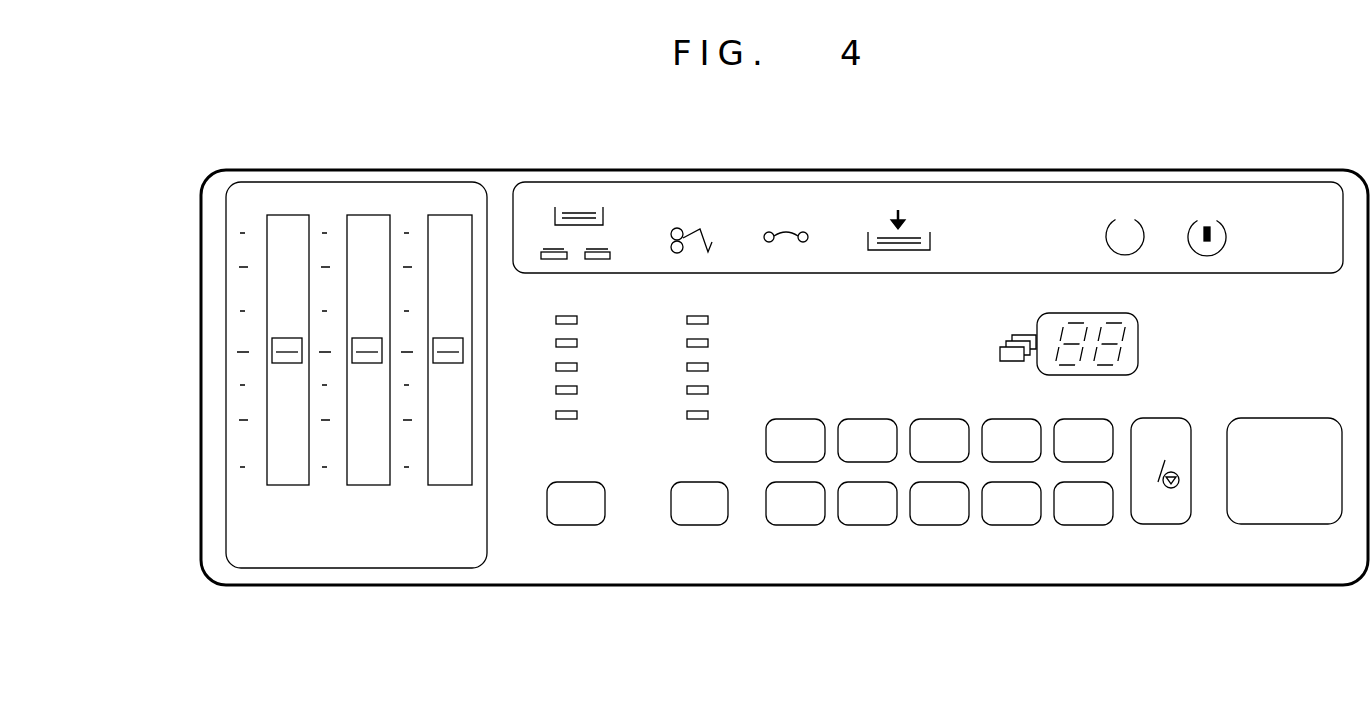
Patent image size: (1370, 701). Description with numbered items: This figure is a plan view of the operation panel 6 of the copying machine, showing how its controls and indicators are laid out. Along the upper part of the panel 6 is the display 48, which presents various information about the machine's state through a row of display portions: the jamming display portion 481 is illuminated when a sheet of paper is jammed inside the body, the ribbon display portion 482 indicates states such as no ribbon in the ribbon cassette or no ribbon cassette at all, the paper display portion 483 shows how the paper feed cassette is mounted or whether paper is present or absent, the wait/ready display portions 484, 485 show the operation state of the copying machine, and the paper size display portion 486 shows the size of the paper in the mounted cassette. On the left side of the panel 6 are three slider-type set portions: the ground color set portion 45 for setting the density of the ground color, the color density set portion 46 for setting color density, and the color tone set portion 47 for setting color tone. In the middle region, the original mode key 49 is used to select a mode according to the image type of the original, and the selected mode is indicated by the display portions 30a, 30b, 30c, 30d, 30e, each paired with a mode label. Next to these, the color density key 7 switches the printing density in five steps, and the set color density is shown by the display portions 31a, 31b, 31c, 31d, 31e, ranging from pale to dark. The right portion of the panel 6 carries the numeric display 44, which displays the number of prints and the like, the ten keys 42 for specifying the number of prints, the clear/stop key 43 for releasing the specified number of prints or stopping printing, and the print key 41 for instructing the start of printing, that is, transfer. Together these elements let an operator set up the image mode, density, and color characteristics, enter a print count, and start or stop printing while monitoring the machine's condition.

The panel 6 is at (1020, 168).
The display 48 is at (922, 274).
The jamming display portion 481 is at (690, 228).
The ribbon display portion 482 is at (788, 230).
The paper display portion 483 is at (898, 210).
The wait/ready display portion 484 is at (1208, 225).
The wait/ready display portion 485 is at (1125, 230).
The paper size display portion 486 is at (577, 207).
The display portion 30a is at (557, 321).
The display portion 30b is at (556, 343).
The display portion 30c is at (556, 367).
The display portion 30d is at (556, 390).
The display portion 30e is at (556, 415).
The display portion 31a is at (697, 316).
The display portion 31b is at (708, 343).
The display portion 31c is at (708, 367).
The display portion 31d is at (708, 390).
The display portion 31e is at (694, 420).
The numeric display 44 is at (1141, 344).
The ten keys 42 is at (765, 548).
The clear/stop key 43 is at (1163, 525).
The print key 41 is at (1287, 525).
The original mode key 49 is at (575, 526).
The color density key 7 is at (700, 526).
The ground color set portion 45 is at (285, 568).
The color density set portion 46 is at (366, 568).
The color tone set portion 47 is at (446, 568).